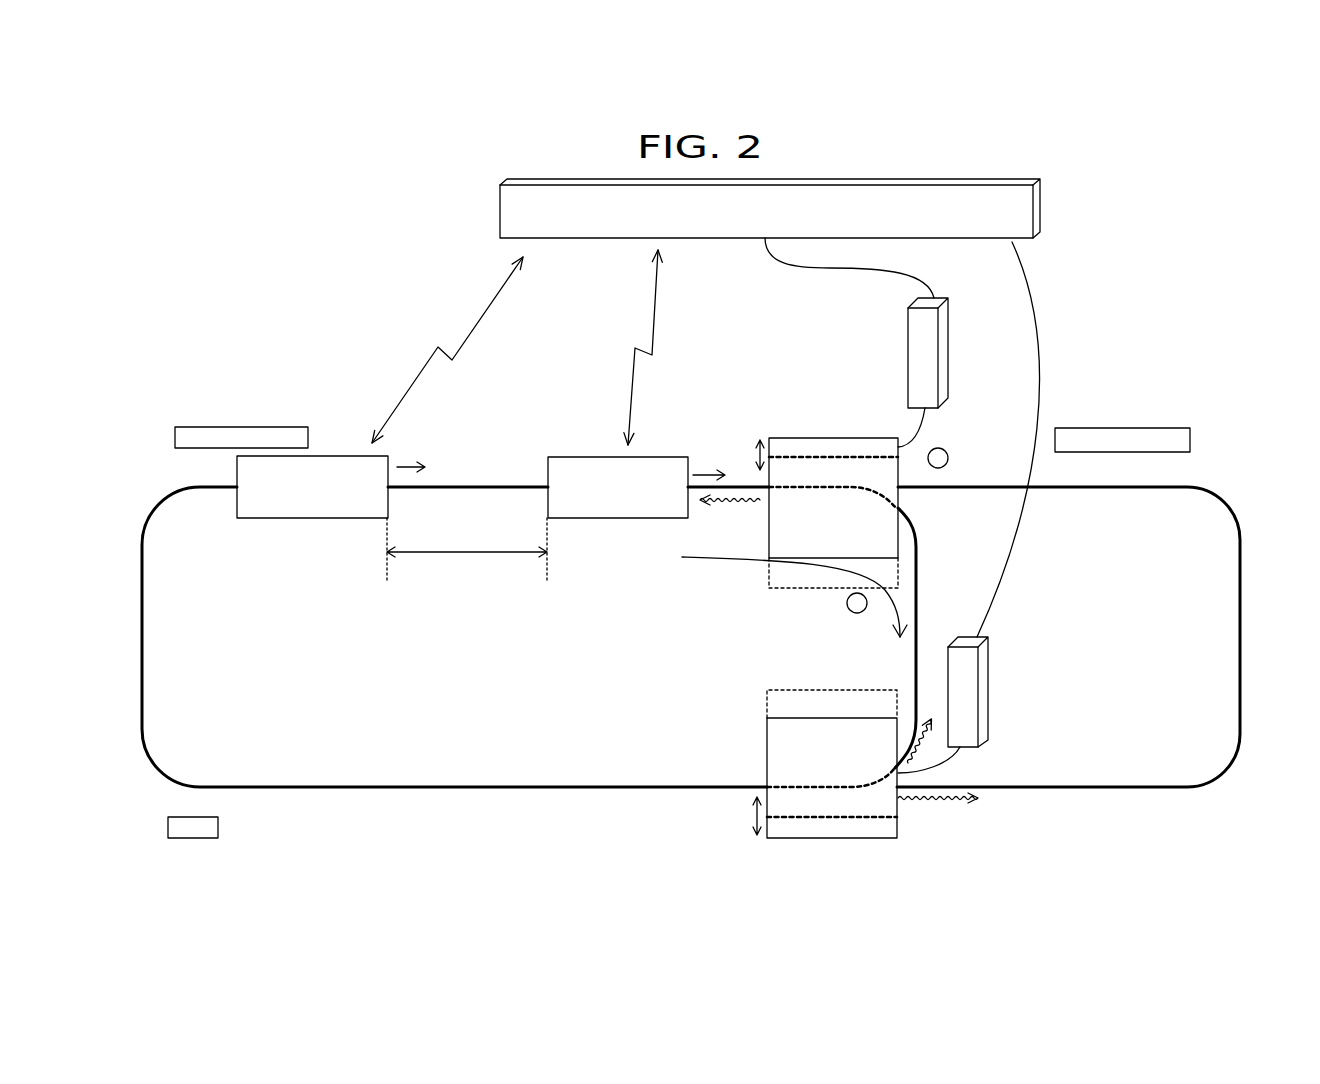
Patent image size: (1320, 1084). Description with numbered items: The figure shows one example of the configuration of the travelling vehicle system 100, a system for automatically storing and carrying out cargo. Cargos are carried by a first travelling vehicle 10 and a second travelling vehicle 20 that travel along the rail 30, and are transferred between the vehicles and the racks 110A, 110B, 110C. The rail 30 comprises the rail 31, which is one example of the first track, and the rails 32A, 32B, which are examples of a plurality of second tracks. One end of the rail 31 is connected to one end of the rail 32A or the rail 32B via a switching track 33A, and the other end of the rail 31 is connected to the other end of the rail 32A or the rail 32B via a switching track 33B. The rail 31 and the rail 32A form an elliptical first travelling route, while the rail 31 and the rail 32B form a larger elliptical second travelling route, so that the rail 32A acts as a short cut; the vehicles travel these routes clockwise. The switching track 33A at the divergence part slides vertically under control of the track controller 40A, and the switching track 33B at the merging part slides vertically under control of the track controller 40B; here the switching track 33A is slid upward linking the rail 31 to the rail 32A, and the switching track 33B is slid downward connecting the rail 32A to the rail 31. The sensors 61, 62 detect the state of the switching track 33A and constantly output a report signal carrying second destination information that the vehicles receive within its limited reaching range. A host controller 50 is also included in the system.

The travelling vehicle system 100 is at (1187, 172).
The host controller 50 is at (1042, 198).
The first travelling vehicle 10 is at (553, 458).
The second travelling vehicle 20 is at (305, 520).
The rail 30 is at (709, 620).
The rail 31 is at (142, 677).
The rail 32A is at (918, 537).
The rail 32B is at (1223, 510).
The switching track 33A is at (788, 438).
The switching track 33B is at (783, 838).
The track controller 40A is at (952, 323).
The track controller 40B is at (990, 662).
The sensor 61 is at (948, 450).
The sensor 62 is at (846, 610).
The rack 110A is at (202, 838).
The rack 110B is at (256, 423).
The rack 110C is at (1135, 428).